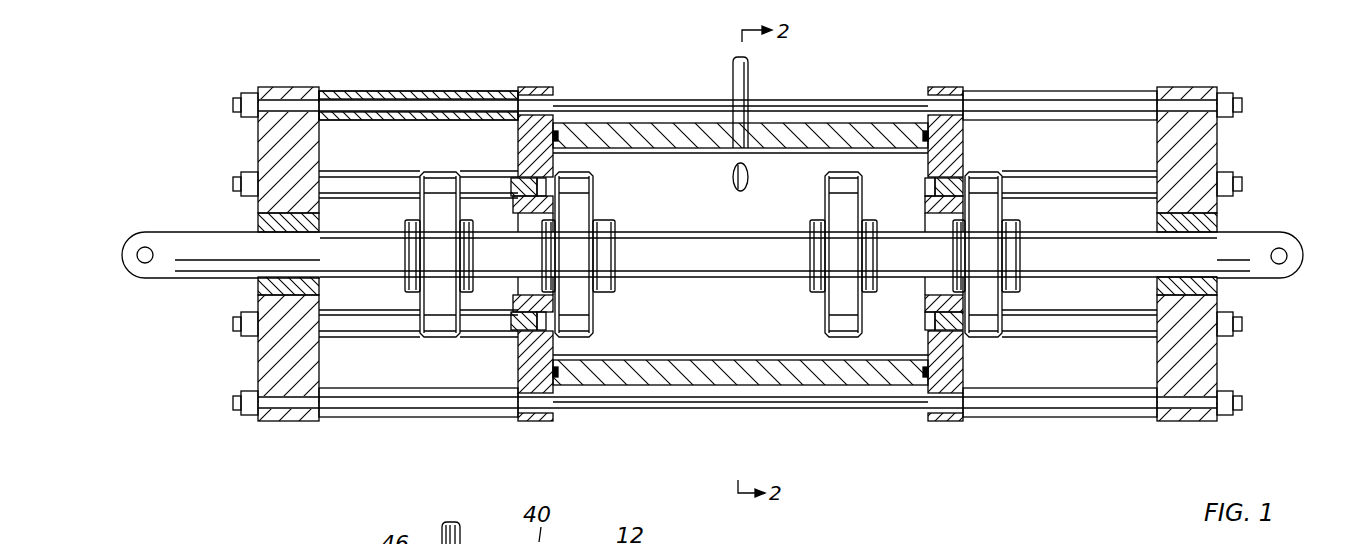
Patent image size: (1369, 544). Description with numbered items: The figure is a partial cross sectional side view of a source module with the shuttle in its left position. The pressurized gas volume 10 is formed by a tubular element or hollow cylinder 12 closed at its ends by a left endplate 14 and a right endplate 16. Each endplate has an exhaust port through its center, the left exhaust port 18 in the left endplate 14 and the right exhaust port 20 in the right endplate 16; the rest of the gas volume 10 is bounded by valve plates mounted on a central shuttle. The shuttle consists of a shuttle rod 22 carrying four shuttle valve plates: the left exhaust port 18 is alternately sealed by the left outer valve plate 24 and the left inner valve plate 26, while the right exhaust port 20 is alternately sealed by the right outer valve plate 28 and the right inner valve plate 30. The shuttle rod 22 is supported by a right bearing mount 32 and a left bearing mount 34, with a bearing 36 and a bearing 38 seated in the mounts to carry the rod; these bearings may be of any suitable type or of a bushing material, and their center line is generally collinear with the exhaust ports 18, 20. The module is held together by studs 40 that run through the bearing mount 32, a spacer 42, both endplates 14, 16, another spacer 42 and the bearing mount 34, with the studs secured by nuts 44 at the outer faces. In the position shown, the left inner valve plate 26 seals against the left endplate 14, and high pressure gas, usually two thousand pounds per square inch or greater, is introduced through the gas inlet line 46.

The pressurized gas volume 10 is at (648, 204).
The hollow cylinder 12 is at (860, 137).
The left endplate 14 is at (540, 130).
The right endplate 16 is at (965, 130).
The left exhaust port 18 is at (507, 217).
The right exhaust port 20 is at (927, 217).
The shuttle rod 22 is at (1285, 239).
The left outer valve plate 24 is at (440, 174).
The left inner valve plate 26 is at (583, 183).
The right outer valve plate 28 is at (988, 193).
The right inner valve plate 30 is at (838, 177).
The right bearing mount 32 is at (1207, 153).
The left bearing mount 34 is at (265, 145).
The bearing 36 is at (1210, 228).
The bearing 38 is at (253, 289).
The studs 40 is at (677, 99).
The spacer 42 is at (367, 92).
The nut 44 is at (251, 92).
The gas inlet line 46 is at (748, 83).